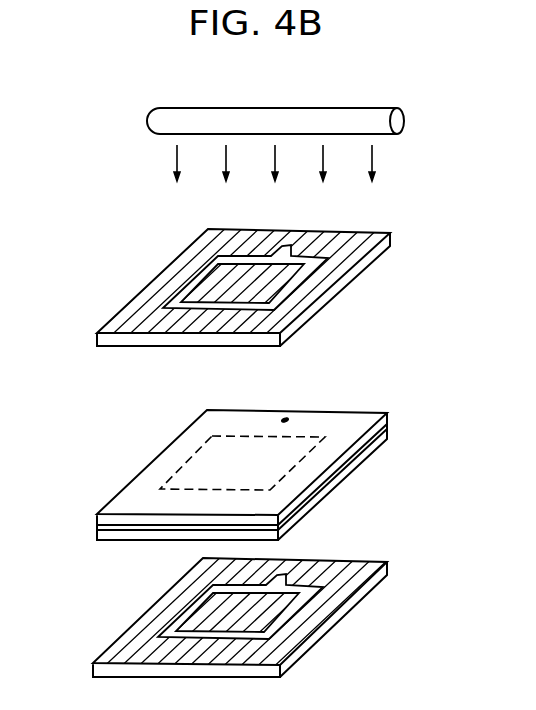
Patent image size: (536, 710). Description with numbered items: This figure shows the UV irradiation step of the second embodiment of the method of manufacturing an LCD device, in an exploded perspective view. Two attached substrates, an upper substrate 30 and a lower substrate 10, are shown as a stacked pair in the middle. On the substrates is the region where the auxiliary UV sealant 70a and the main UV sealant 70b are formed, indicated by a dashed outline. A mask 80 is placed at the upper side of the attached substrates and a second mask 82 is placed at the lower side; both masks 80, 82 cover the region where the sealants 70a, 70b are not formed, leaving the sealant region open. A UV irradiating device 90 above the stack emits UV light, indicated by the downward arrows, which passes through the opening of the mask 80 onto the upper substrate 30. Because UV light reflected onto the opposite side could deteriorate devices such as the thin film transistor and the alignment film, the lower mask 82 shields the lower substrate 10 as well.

The UV irradiating device 90 is at (404, 121).
The mask 80 is at (355, 273).
The upper substrate 30 is at (153, 460).
The lower substrate 10 is at (100, 535).
The auxiliary UV sealant 70a is at (275, 435).
The main UV sealant 70b is at (305, 435).
The mask 82 is at (363, 593).